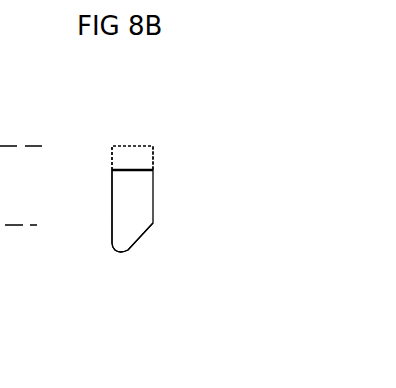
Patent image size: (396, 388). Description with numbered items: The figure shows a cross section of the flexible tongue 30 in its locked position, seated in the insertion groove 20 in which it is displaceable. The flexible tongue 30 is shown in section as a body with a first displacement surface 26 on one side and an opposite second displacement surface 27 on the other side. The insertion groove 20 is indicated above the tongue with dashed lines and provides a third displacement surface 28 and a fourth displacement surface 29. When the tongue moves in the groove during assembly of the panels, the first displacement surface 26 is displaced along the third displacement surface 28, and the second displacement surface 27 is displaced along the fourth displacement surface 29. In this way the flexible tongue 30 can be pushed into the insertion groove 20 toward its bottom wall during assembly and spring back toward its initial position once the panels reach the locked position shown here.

The insertion groove 20 is at (131, 156).
The first displacement surface 26 is at (153, 203).
The second displacement surface 27 is at (110, 203).
The third displacement surface 28 is at (152, 152).
The fourth displacement surface 29 is at (112, 157).
The flexible tongue 30 is at (123, 235).